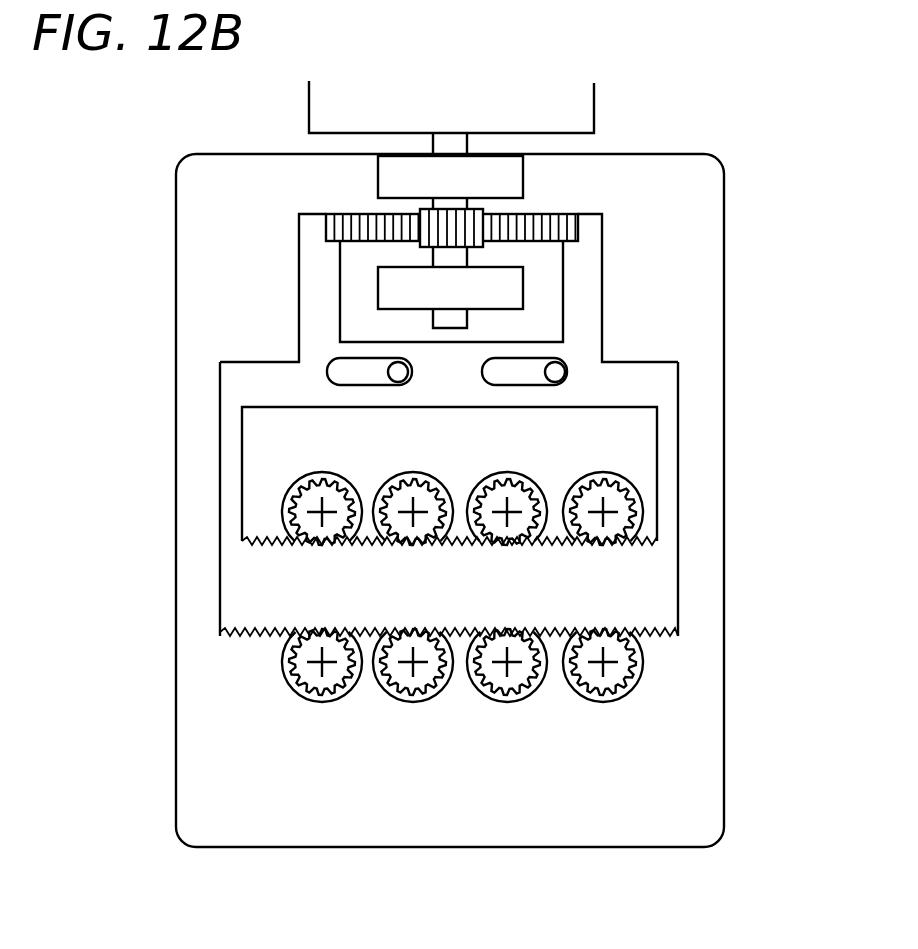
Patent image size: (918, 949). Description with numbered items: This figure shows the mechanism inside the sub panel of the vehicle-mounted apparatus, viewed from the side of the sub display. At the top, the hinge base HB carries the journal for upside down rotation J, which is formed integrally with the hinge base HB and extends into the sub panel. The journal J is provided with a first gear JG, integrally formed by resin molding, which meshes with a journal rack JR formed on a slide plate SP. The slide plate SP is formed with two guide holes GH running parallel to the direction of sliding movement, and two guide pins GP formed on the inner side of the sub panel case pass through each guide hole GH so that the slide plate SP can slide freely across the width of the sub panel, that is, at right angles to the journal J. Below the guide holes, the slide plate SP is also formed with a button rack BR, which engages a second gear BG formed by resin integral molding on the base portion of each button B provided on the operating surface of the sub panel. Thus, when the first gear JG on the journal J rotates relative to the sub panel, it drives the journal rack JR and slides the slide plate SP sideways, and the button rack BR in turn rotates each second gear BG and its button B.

The hinge base HB is at (585, 96).
The first gear JG is at (427, 211).
The journal rack JR is at (552, 214).
The journal for upside down rotation J is at (460, 258).
The slide plate SP is at (673, 413).
The guide hole GH is at (502, 428).
The guide pin GP is at (557, 430).
The second gear BG is at (637, 530).
The button rack BR is at (278, 630).
The button B is at (603, 735).